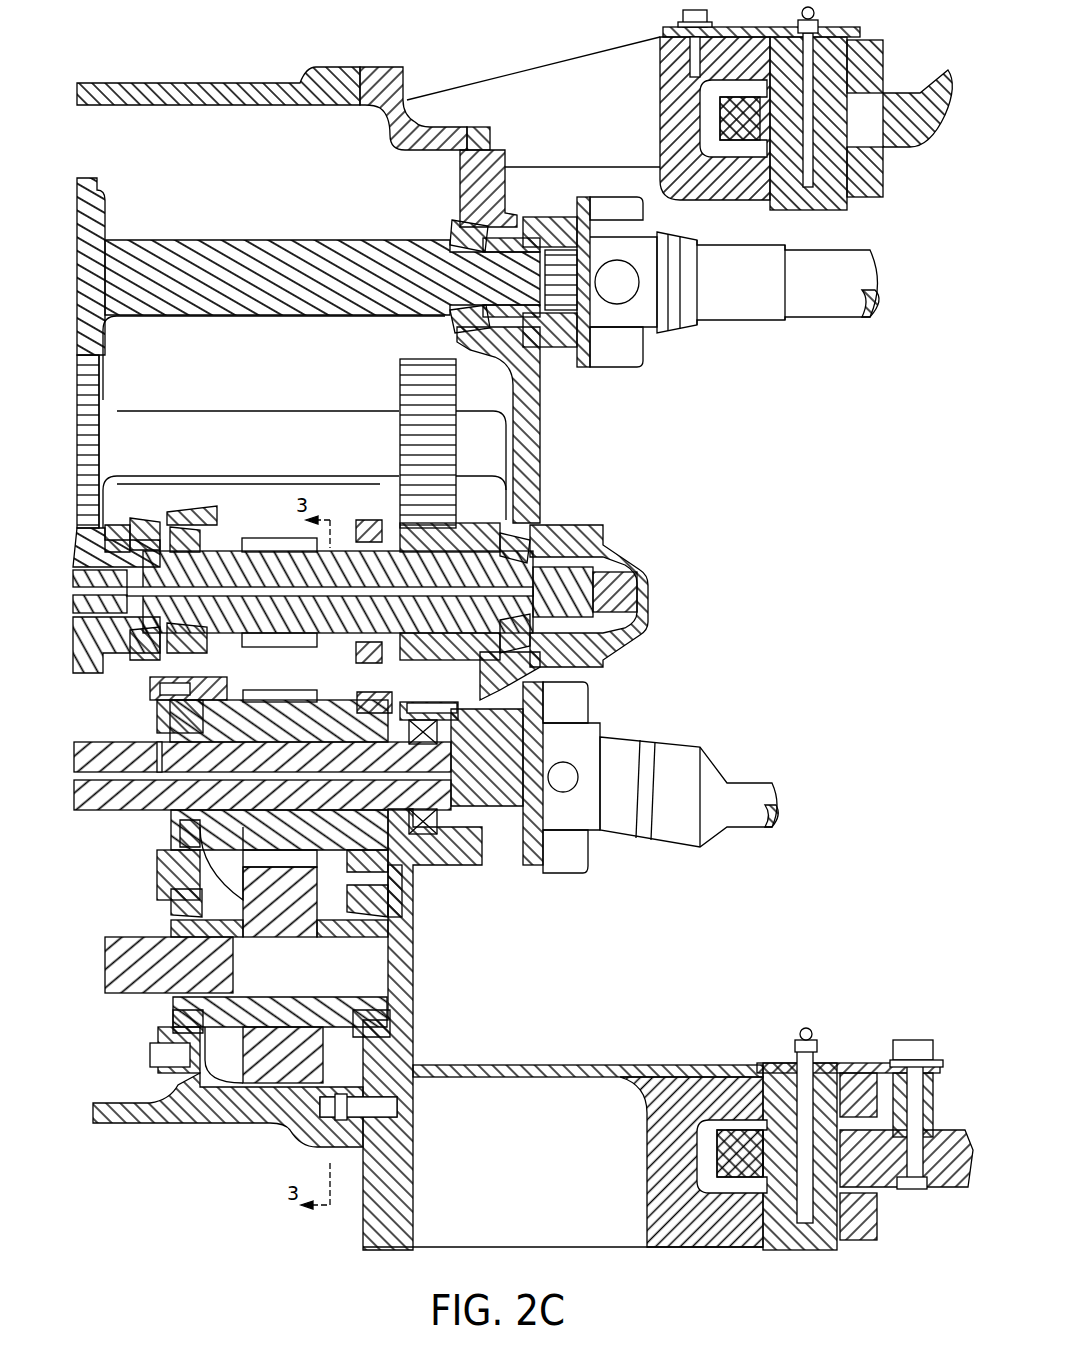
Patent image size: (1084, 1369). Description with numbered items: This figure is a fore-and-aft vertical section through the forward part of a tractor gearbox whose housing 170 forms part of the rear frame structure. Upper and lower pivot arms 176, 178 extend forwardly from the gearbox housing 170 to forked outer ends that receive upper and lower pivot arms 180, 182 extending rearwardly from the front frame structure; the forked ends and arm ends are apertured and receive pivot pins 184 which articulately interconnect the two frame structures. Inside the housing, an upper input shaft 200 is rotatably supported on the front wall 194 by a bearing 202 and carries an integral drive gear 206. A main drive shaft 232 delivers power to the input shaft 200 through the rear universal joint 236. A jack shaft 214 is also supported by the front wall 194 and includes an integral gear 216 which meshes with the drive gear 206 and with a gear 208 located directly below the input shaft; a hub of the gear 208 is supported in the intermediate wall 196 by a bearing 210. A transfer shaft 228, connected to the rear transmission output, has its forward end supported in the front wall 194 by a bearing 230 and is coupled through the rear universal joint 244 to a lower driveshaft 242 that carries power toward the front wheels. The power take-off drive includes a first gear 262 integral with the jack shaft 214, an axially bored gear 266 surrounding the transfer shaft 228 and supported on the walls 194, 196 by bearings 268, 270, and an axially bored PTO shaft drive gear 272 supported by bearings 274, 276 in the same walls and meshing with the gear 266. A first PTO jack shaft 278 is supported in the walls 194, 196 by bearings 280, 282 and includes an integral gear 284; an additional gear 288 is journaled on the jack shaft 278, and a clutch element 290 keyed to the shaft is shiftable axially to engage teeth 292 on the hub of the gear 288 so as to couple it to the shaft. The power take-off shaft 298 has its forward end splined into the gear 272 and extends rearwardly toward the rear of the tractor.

The gearbox housing 170 is at (222, 90).
The upper pivot arm 176 is at (570, 72).
The upper pivot arm 180 is at (922, 130).
The pivot pin 184 is at (828, 200).
The drive gear 206 is at (100, 182).
The upper input shaft 200 is at (280, 248).
The bearing 202 is at (450, 232).
The main drive shaft 232 is at (868, 272).
The rear universal joint 236 is at (630, 372).
The gear 216 is at (103, 392).
The jack shaft 214 is at (211, 420).
The first gear 262 is at (400, 373).
The front wall 194 is at (541, 416).
The gear 208 is at (115, 540).
The bearing 210 is at (148, 530).
The intermediate wall 196 is at (205, 514).
The clutch element 290 is at (364, 528).
The gear 284 is at (264, 545).
The additional gear 288 is at (466, 538).
The bearing 280 is at (532, 538).
The bearing 282 is at (205, 648).
The first PTO jack shaft 278 is at (338, 630).
The teeth 292 is at (374, 660).
The axially bored gear 266 is at (305, 708).
The bearing 270 is at (165, 720).
The transfer shaft 228 is at (112, 752).
The rear universal joint 244 is at (580, 700).
The lower driveshaft 242 is at (762, 790).
The PTO shaft drive gear 272 is at (245, 890).
The bearing 268 is at (352, 852).
The bearing 230 is at (416, 862).
The bearing 276 is at (165, 905).
The bearing 274 is at (395, 915).
The power take-off shaft 298 is at (112, 955).
The lower pivot arm 178 is at (688, 1240).
The lower pivot arm 182 is at (955, 1135).